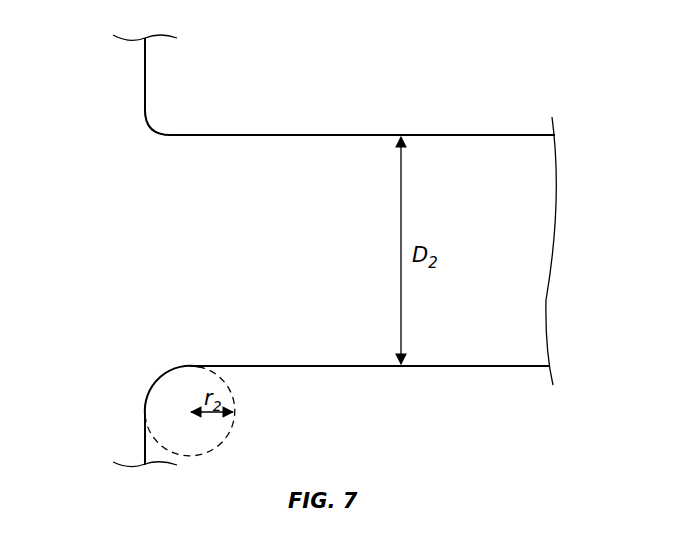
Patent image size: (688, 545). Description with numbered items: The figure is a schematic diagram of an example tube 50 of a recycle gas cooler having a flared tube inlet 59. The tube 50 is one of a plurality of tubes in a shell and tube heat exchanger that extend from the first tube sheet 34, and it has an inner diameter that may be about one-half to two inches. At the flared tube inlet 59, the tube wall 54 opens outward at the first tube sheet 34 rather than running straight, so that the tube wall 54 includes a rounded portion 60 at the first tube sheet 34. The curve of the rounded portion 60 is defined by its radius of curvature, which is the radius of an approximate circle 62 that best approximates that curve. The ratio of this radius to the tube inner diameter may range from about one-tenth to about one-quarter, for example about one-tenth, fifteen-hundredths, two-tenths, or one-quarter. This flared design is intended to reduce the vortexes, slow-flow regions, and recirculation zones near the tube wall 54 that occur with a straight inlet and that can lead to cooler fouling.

The first tube sheet 34 is at (145, 90).
The tube 50 is at (404, 116).
The tube wall 54 is at (215, 135).
The flared tube inlet 59 is at (170, 252).
The rounded portion 60 is at (170, 137).
The approximate circle 62 is at (220, 446).